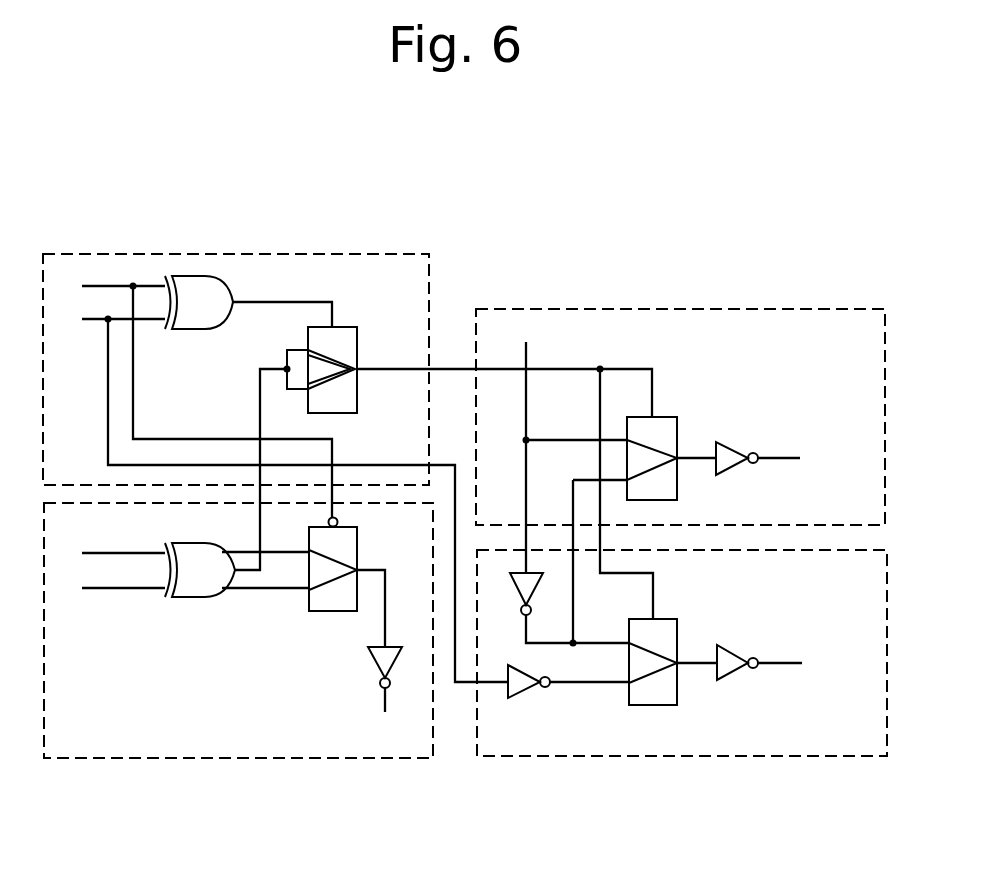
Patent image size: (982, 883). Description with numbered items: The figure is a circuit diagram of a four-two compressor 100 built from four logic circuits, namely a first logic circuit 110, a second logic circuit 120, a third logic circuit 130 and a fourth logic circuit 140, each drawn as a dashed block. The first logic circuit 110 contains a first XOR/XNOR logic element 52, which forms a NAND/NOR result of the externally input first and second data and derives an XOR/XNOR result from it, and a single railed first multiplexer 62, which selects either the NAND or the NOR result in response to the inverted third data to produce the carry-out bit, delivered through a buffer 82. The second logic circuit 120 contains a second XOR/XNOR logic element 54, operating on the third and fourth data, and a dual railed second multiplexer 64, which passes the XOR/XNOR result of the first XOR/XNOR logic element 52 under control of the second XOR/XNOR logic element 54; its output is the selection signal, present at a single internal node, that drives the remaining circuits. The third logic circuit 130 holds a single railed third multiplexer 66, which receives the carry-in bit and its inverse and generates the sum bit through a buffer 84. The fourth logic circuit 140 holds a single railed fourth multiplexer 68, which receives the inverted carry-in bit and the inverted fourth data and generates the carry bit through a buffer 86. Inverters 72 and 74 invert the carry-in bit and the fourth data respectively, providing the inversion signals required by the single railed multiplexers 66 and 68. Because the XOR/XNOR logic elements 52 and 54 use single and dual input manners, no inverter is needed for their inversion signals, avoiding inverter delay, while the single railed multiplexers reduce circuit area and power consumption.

The 4-2 compressor 100 is at (794, 191).
The first logic circuit 110 is at (349, 758).
The second logic circuit 120 is at (343, 254).
The third logic circuit 130 is at (805, 309).
The fourth logic circuit 140 is at (803, 756).
The first XOR/XNOR logic element 52 is at (185, 598).
The second XOR/XNOR logic element 54 is at (185, 330).
The first multiplexer 62 is at (358, 543).
The second multiplexer 64 is at (345, 327).
The third multiplexer 66 is at (667, 417).
The fourth multiplexer 68 is at (667, 619).
The inverter 72 is at (538, 585).
The inverter 74 is at (523, 698).
The buffer 82 is at (368, 660).
The buffer 84 is at (733, 442).
The buffer 86 is at (735, 645).